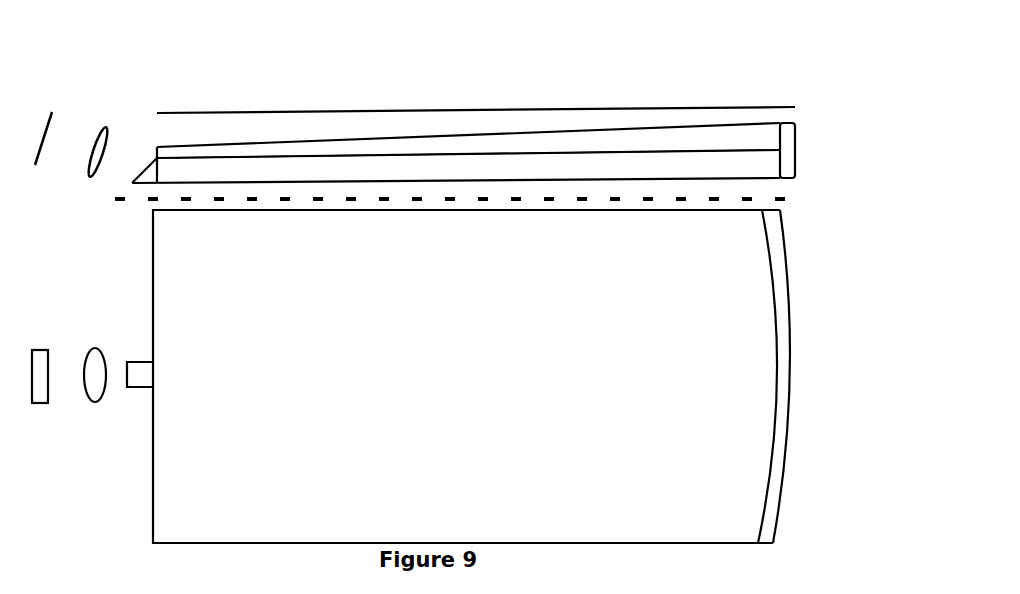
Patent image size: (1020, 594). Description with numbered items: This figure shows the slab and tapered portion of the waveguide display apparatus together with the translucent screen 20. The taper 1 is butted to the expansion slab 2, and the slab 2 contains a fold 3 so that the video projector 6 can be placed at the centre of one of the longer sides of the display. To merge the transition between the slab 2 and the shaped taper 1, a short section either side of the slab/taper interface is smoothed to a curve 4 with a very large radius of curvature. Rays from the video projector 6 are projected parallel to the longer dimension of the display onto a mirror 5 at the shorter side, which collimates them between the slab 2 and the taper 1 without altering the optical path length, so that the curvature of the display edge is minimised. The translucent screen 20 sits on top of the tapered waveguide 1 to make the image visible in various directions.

The taper 1 is at (365, 128).
The expansion slab 2 is at (762, 186).
The fold 3 is at (815, 147).
The curve 4 is at (735, 115).
The mirror 5 is at (805, 392).
The video projector 6 is at (73, 418).
The screen 20 is at (560, 105).